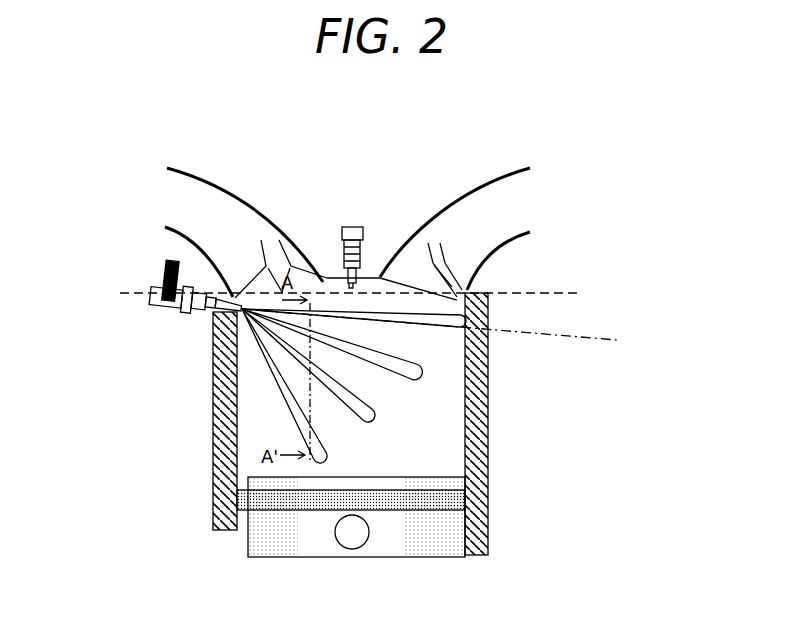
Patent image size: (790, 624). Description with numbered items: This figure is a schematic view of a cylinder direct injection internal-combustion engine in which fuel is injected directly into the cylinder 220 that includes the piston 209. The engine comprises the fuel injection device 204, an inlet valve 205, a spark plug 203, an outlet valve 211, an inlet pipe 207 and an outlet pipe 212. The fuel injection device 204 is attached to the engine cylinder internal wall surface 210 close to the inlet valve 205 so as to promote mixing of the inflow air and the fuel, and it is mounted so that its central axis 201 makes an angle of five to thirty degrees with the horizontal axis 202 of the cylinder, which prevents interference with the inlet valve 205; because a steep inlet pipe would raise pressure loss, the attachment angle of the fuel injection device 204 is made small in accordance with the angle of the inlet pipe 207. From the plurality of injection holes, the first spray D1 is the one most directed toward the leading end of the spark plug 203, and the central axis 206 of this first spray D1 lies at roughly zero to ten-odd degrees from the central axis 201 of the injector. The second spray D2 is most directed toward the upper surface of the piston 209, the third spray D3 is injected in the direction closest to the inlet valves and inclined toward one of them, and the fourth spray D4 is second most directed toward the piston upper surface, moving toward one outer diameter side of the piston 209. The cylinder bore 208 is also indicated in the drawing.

The central axis of the fuel injection device 201 is at (113, 285).
The horizontal axis 202 is at (540, 293).
The spark plug 203 is at (353, 222).
The fuel injection device 204 is at (185, 307).
The inlet valve 205 is at (268, 227).
The central axis of the first spray 206 is at (612, 340).
The inlet pipe 207 is at (193, 167).
The cylinder bore 208 is at (215, 438).
The piston 209 is at (248, 532).
The engine cylinder internal wall surface 210 is at (213, 417).
The outlet valve 211 is at (437, 237).
The outlet pipe 212 is at (450, 180).
The cylinder 220 is at (490, 498).
The first spray D1 is at (470, 322).
The second spray D2 is at (328, 460).
The third spray D3 is at (398, 372).
The fourth spray D4 is at (375, 430).